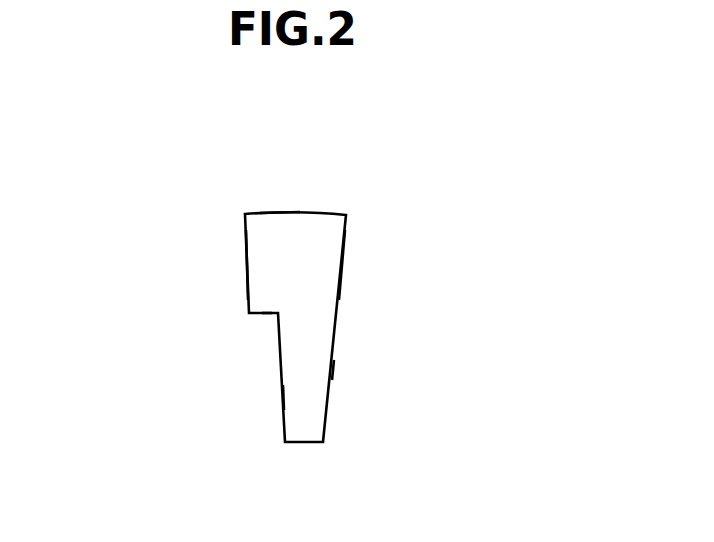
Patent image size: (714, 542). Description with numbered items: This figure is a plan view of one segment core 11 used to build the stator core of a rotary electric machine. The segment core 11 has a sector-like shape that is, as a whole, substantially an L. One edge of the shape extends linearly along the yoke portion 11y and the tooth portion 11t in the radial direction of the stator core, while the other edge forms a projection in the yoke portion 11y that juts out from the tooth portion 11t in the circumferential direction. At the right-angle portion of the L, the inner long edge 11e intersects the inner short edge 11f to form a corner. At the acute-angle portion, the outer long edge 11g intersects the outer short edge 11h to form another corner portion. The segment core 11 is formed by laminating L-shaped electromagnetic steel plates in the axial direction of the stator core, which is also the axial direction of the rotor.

The segment core 11 is at (343, 191).
The outer short edge 11h is at (283, 211).
The yoke portion 11y is at (278, 262).
The outer long edge 11g is at (340, 293).
The inner short edge 11f is at (265, 316).
The tooth portion 11t is at (313, 367).
The inner long edge 11e is at (282, 397).